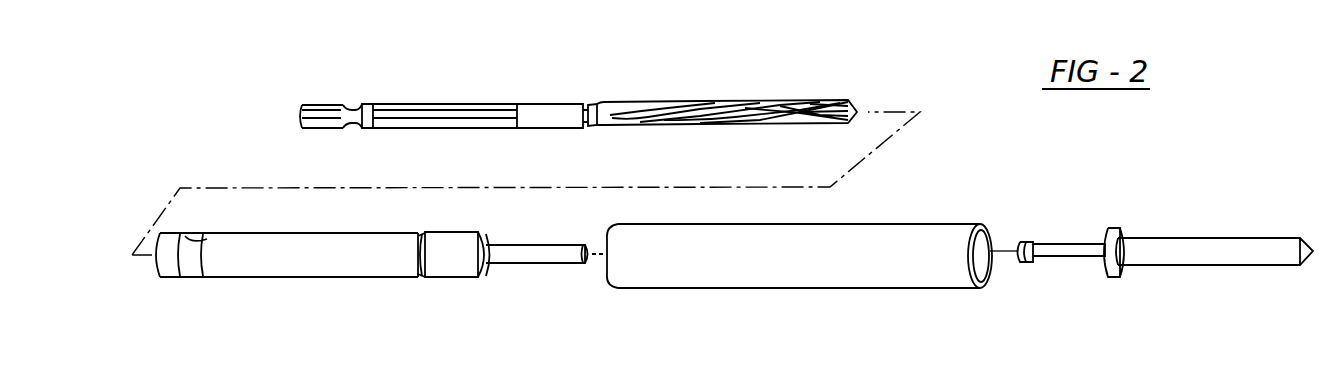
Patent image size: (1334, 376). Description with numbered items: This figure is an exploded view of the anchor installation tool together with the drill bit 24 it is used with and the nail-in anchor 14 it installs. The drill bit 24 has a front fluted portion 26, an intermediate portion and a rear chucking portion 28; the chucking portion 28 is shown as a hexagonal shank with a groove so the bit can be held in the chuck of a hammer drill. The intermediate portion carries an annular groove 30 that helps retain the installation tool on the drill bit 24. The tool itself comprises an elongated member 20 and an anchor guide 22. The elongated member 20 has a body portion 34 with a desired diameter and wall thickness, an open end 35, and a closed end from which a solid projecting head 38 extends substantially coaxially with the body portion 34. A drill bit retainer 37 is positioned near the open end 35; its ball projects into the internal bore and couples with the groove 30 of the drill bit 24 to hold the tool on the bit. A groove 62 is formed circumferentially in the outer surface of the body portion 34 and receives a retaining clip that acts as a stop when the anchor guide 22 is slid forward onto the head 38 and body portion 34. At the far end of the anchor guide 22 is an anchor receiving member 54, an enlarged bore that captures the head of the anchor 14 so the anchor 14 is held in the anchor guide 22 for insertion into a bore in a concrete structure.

The nail-in anchor 14 is at (1186, 203).
The elongated member 20 is at (361, 231).
The anchor guide 22 is at (918, 225).
The drill bit 24 is at (597, 92).
The front fluted portion 26 is at (747, 100).
The chucking portion 28 is at (398, 104).
The groove 30 is at (586, 122).
The body portion 34 is at (287, 258).
The open end 35 is at (157, 270).
The drill bit retainer 37 is at (193, 258).
The projecting head 38 is at (543, 258).
The anchor receiving member 54 is at (992, 240).
The groove 62 is at (422, 268).